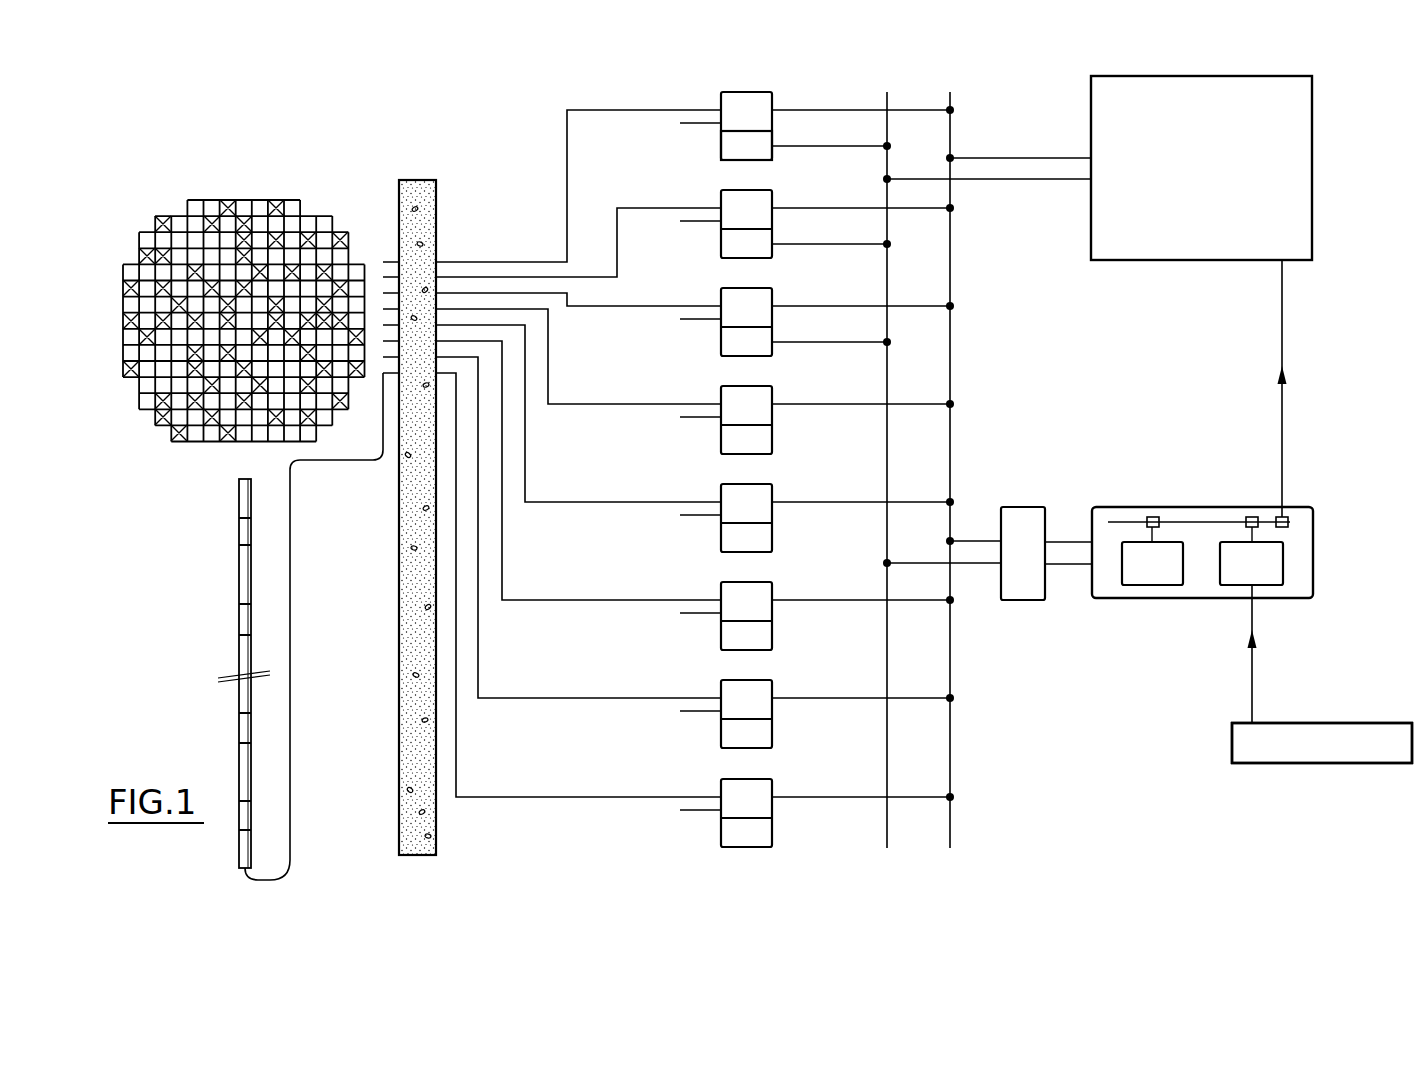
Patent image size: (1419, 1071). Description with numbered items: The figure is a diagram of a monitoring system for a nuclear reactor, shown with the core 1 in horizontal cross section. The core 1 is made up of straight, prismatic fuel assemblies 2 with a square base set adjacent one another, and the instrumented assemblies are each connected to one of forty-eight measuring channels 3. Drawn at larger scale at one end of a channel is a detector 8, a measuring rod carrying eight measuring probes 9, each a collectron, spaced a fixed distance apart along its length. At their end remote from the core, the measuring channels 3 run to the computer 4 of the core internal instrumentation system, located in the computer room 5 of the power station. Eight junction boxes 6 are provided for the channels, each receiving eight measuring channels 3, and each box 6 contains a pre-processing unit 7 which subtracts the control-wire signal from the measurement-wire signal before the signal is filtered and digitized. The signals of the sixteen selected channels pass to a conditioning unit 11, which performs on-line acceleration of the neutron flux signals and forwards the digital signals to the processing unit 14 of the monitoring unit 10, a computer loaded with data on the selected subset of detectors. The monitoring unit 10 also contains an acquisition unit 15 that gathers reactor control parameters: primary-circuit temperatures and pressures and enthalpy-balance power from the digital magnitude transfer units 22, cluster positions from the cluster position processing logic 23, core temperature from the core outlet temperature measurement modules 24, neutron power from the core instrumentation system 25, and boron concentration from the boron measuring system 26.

The core 1 is at (260, 185).
The fuel assemblies 2 is at (197, 208).
The measuring channels 3 is at (533, 308).
The computer 4 is at (1227, 262).
The computer room 5 is at (1235, 168).
The junction boxes 6 is at (763, 100).
The pre-processing unit 7 is at (764, 141).
The detector 8 is at (280, 778).
The measuring probes 9 is at (252, 537).
The monitoring unit 10 is at (1192, 532).
The conditioning unit 11 is at (1018, 527).
The processing unit 14 is at (1152, 563).
The acquisition unit 15 is at (1251, 632).
The digital magnitude transfer units 22 is at (1322, 743).
The cluster position processing logic 23 is at (1322, 743).
The modules for general measurement of the core outlet temperature 24 is at (1322, 743).
The core instrumentation system 25 is at (1322, 743).
The boron measuring system 26 is at (1322, 743).